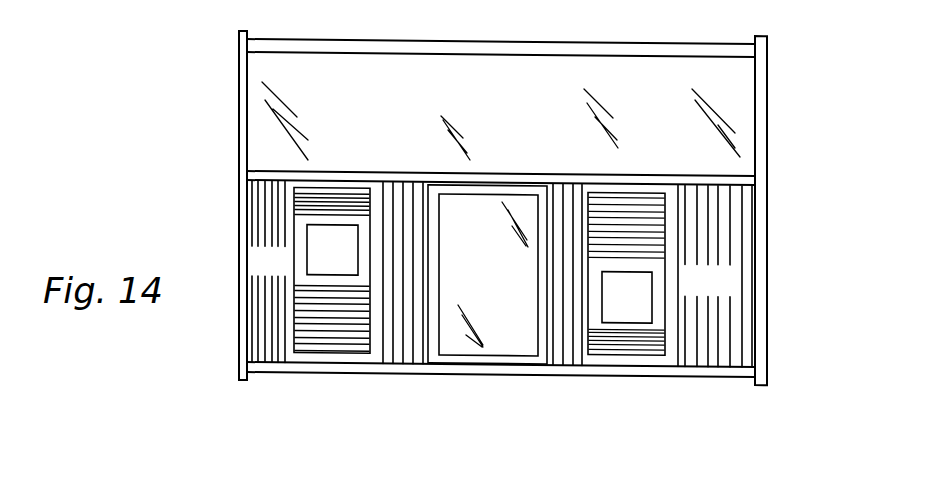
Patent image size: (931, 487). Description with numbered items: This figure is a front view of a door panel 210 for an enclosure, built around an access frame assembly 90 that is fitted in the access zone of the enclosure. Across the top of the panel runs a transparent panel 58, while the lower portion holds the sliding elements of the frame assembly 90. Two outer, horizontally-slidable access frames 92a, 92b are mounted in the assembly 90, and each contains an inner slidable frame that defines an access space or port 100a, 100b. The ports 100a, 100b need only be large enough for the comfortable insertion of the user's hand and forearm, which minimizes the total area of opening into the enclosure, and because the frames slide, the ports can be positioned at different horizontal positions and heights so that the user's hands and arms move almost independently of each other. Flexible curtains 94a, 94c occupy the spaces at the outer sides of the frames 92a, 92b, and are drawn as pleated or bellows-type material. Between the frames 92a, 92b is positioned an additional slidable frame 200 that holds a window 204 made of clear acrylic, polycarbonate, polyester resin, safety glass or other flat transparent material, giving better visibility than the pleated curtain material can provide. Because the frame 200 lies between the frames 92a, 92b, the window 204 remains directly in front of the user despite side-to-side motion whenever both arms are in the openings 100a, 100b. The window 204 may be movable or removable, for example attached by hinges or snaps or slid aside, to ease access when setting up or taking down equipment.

The display cabinet assembly 210 is at (790, 141).
The glass panel 58 is at (507, 120).
The flexible curtain 94a is at (288, 270).
The flexible curtain 94c is at (732, 288).
The access port 100a is at (356, 267).
The access port 100b is at (650, 310).
The window 204 is at (505, 285).
The slidable frame 200 is at (498, 364).
The outer horizontally-slidable access frame 92a is at (355, 362).
The outer horizontally-slidable access frame 92b is at (633, 367).
The access frame assembly 90 is at (277, 362).